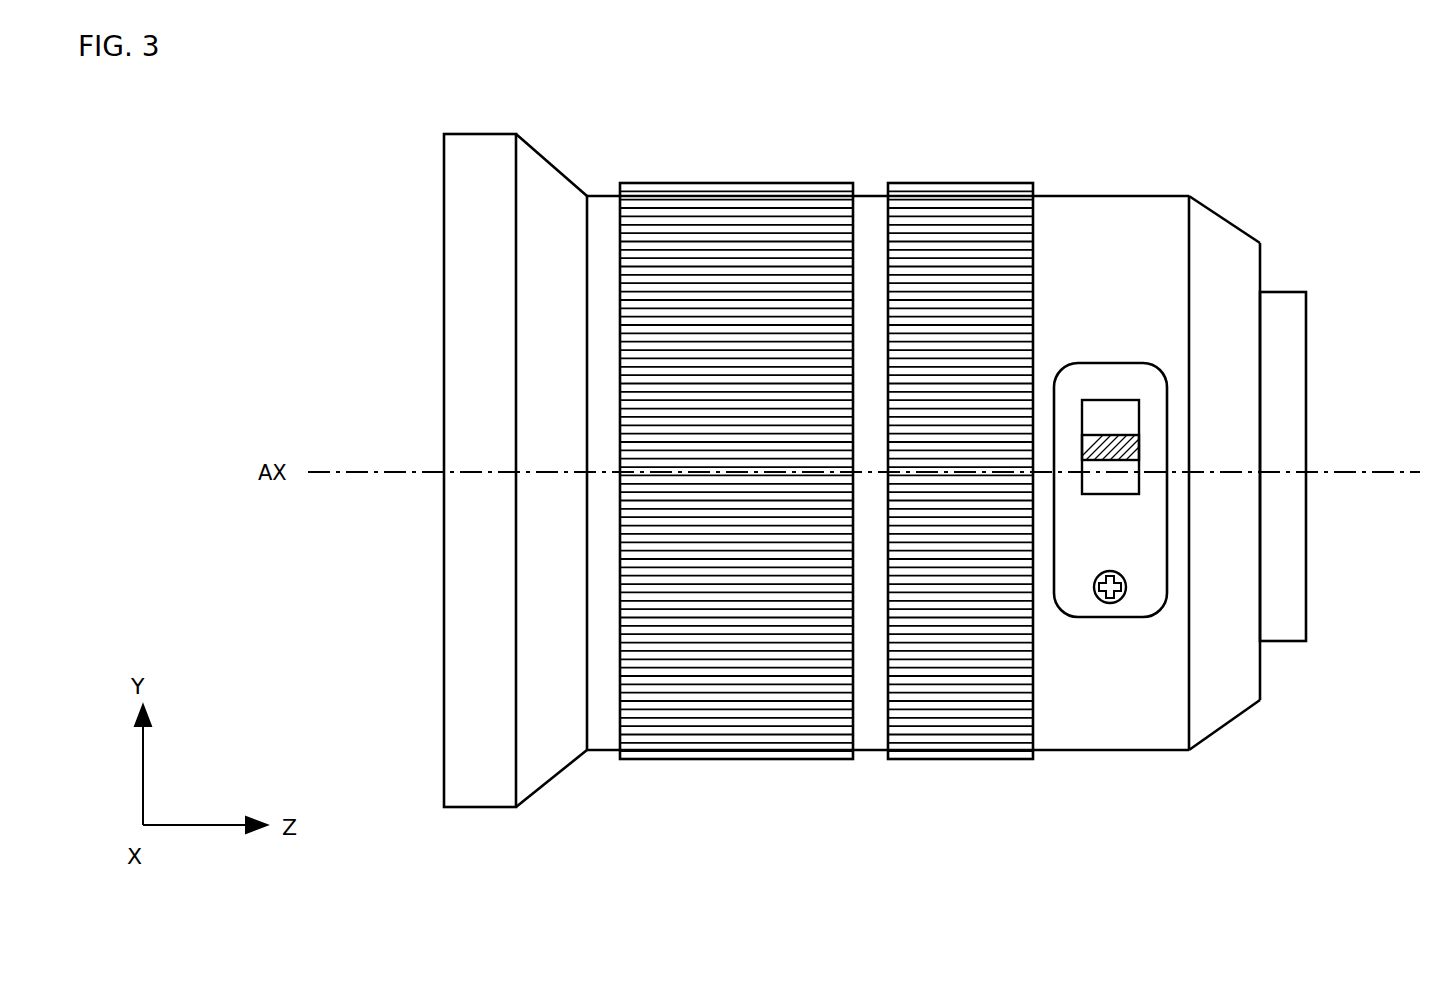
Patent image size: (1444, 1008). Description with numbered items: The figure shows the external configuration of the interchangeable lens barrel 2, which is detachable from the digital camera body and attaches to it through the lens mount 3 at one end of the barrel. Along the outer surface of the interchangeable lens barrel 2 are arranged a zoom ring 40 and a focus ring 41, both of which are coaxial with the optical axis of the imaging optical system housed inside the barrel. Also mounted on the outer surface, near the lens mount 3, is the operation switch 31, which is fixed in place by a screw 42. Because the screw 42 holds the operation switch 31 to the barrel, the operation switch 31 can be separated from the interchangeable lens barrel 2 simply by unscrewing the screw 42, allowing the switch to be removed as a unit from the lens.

The interchangeable lens barrel 2 is at (444, 228).
The lens mount 3 is at (1306, 613).
The operation switch 31 is at (1145, 365).
The zoom ring 40 is at (746, 760).
The focus ring 41 is at (958, 760).
The screw 42 is at (1110, 603).